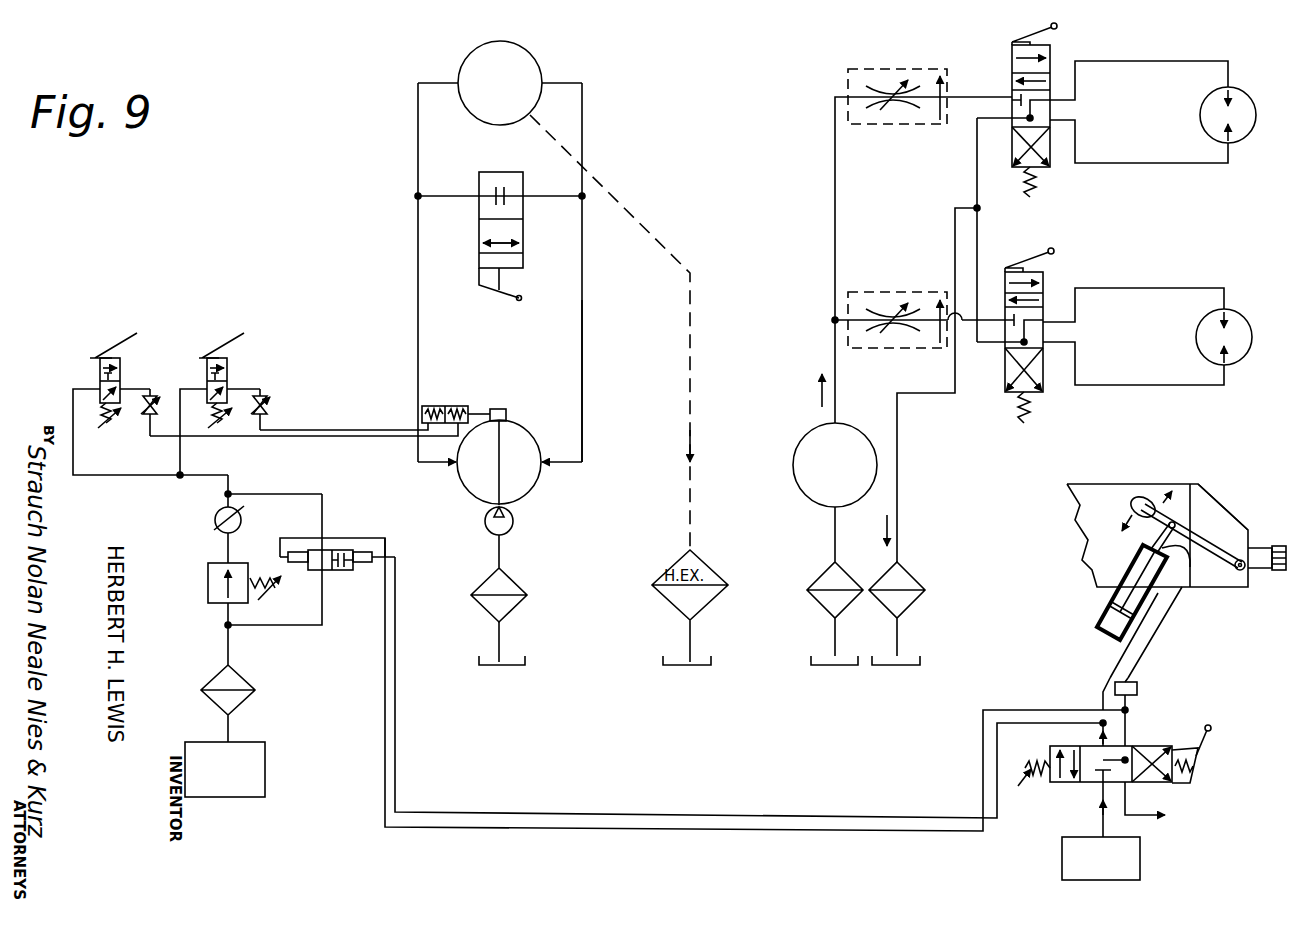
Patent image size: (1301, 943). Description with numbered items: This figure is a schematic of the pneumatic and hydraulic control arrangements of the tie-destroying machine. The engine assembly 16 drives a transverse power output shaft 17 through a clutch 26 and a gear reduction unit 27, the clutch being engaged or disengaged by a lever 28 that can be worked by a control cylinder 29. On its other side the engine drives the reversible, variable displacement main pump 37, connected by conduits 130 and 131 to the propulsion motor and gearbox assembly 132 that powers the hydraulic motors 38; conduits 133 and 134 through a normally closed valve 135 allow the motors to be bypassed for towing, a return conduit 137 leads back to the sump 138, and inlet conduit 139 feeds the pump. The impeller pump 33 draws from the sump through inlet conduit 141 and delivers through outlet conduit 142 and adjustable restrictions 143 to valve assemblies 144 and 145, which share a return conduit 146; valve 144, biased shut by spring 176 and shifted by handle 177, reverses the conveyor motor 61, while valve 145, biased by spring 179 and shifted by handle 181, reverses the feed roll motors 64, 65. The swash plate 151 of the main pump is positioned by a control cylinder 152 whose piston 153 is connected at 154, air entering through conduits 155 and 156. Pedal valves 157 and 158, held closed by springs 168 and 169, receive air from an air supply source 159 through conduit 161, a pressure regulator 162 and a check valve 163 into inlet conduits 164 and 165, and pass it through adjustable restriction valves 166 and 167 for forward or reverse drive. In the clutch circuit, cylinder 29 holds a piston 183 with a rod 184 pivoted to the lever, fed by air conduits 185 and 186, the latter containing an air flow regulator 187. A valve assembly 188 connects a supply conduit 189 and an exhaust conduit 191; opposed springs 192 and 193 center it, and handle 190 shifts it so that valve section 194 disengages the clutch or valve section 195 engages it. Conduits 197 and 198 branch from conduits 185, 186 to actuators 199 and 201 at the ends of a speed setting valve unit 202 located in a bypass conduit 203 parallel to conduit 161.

The engine assembly 16 is at (1178, 515).
The transverse power output shaft 17 is at (1279, 546).
The clutch 26 is at (1242, 527).
The gear reduction unit 27 is at (1262, 546).
The clutch lever 28 is at (1194, 538).
The clutch control cylinder 29 is at (1108, 581).
The hydraulic impeller pump 33 is at (793, 466).
The hydraulic main pump 37 is at (501, 477).
The hydraulic motors 38 is at (514, 76).
The conveyor motor 61 is at (1240, 96).
The feed roll motor 64 is at (1147, 336).
The feed roll motor 65 is at (1200, 340).
The conduit 130 is at (418, 356).
The conduit 131 is at (582, 360).
The main propulsion motor and gearbox assembly 132 is at (543, 58).
The conduit 133 is at (445, 196).
The conduit 134 is at (523, 231).
The bypass valve 135 is at (523, 233).
The return conduit 137 is at (690, 394).
The sump 138 is at (525, 662).
The inlet conduit 139 is at (499, 560).
The inlet conduit 141 is at (835, 550).
The outlet conduit 142 is at (835, 196).
The adjustable restriction 143 is at (886, 78).
The valve assembly 144 is at (1049, 102).
The valve assembly 145 is at (1063, 325).
The return conduit 146 is at (955, 242).
The swash plate 151 is at (507, 455).
The control cylinder 152 is at (420, 400).
The piston 153 is at (422, 414).
The connection 154 is at (497, 409).
The air conduit 155 is at (330, 436).
The air conduit 156 is at (311, 430).
The pedal actuated valve 157 is at (117, 368).
The pedal actuated valve 158 is at (230, 368).
The air supply source 159 is at (265, 758).
The air supply conduit 161 is at (228, 644).
The pressure regulator 162 is at (208, 577).
The check valve 163 is at (215, 527).
The inlet conduit 164 is at (73, 464).
The inlet conduit 165 is at (180, 464).
The adjustable restriction valve 166 is at (155, 397).
The adjustable restriction valve 167 is at (272, 400).
The spring 168 is at (108, 413).
The spring 169 is at (235, 412).
The spring 176 is at (1036, 188).
The handle 177 is at (1046, 27).
The spring 179 is at (1031, 412).
The handle 181 is at (1046, 251).
The piston 183 is at (1103, 622).
The piston rod 184 is at (1193, 560).
The air conduit 185 is at (1108, 678).
The air conduit 186 is at (1150, 640).
The air flow regulator 187 is at (1138, 690).
The valve assembly 188 is at (1138, 755).
The conduit 189 is at (1100, 828).
The handle 190 is at (1212, 731).
The exhaust conduit 191 is at (1134, 794).
The spring 192 is at (1029, 779).
The spring 193 is at (1198, 768).
The valve section 194 is at (1072, 746).
The valve section 195 is at (1158, 752).
The conduit 197 is at (778, 829).
The conduit 198 is at (782, 815).
The actuator 199 is at (298, 562).
The actuator 201 is at (364, 562).
The vehicle drive speed setting valve unit 202 is at (337, 556).
The bypass conduit 203 is at (276, 627).